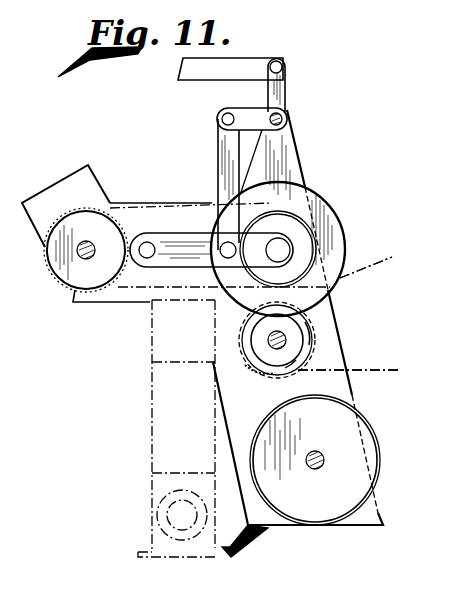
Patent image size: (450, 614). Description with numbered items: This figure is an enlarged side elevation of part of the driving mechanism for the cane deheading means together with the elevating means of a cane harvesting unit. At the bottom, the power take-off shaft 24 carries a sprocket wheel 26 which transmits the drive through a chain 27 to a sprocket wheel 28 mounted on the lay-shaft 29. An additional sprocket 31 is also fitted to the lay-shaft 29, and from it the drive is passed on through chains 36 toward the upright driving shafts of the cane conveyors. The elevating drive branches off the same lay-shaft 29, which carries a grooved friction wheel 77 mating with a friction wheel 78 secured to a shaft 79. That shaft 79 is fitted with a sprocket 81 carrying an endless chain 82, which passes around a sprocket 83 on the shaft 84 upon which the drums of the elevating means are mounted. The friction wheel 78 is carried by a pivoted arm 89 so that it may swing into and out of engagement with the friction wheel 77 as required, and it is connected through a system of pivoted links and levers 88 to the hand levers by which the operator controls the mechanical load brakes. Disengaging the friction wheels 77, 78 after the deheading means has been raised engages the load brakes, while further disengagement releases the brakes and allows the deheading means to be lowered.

The power take-off shaft 24 is at (315, 470).
The sprocket wheel 26 is at (372, 428).
The chain 27 is at (333, 368).
The sprocket wheel 28 is at (320, 340).
The lay-shaft 29 is at (268, 340).
The additional sprocket 31 is at (253, 360).
The chain 36 is at (363, 268).
The grooved friction wheel 77 is at (297, 362).
The friction wheel 78 is at (327, 207).
The shaft 79 is at (340, 232).
The sprocket 81 is at (298, 193).
The endless chain 82 is at (153, 207).
The sprocket 83 is at (88, 290).
The shaft 84 is at (86, 245).
The pivoted links and levers 88 is at (217, 150).
The pivoted arm 89 is at (157, 258).